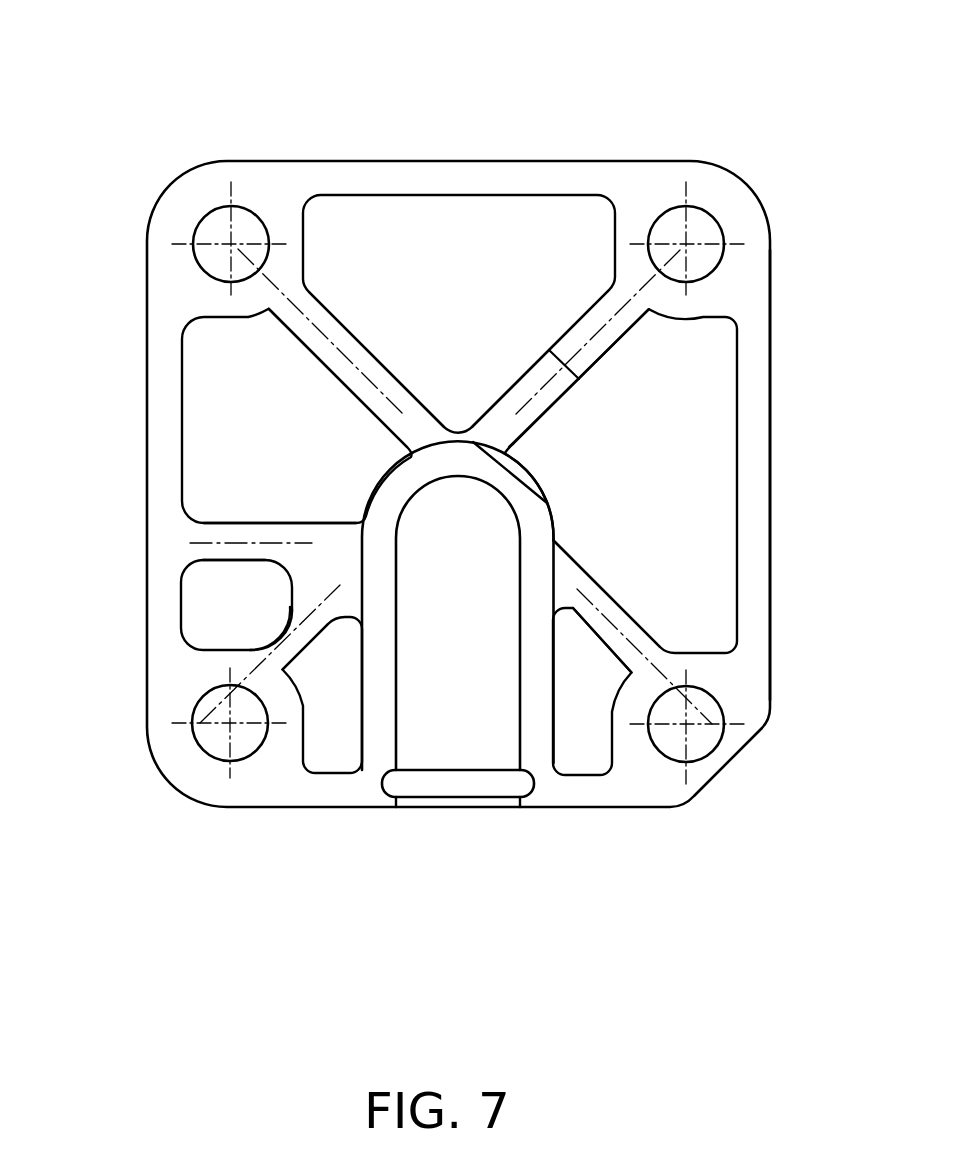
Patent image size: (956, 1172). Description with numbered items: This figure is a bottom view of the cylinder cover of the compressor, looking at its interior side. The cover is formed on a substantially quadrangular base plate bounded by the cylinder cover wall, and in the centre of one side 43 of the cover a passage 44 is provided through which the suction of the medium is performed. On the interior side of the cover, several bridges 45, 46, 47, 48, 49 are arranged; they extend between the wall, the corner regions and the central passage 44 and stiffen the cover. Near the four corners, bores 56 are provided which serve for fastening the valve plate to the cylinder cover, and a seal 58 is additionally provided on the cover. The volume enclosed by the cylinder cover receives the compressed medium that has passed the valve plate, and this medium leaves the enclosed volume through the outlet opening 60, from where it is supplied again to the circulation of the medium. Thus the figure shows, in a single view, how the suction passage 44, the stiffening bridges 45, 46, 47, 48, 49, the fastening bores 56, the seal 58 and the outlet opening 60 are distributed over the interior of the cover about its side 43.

The side of the cylinder cover 43 is at (597, 810).
The passage 44 is at (470, 725).
The bridge 45 is at (598, 343).
The bridge 46 is at (356, 357).
The bridge 47 is at (595, 602).
The bridge 48 is at (270, 543).
The bridge 49 is at (305, 630).
The bores 56 is at (246, 232).
The seal 58 is at (753, 600).
The outlet opening 60 is at (230, 598).